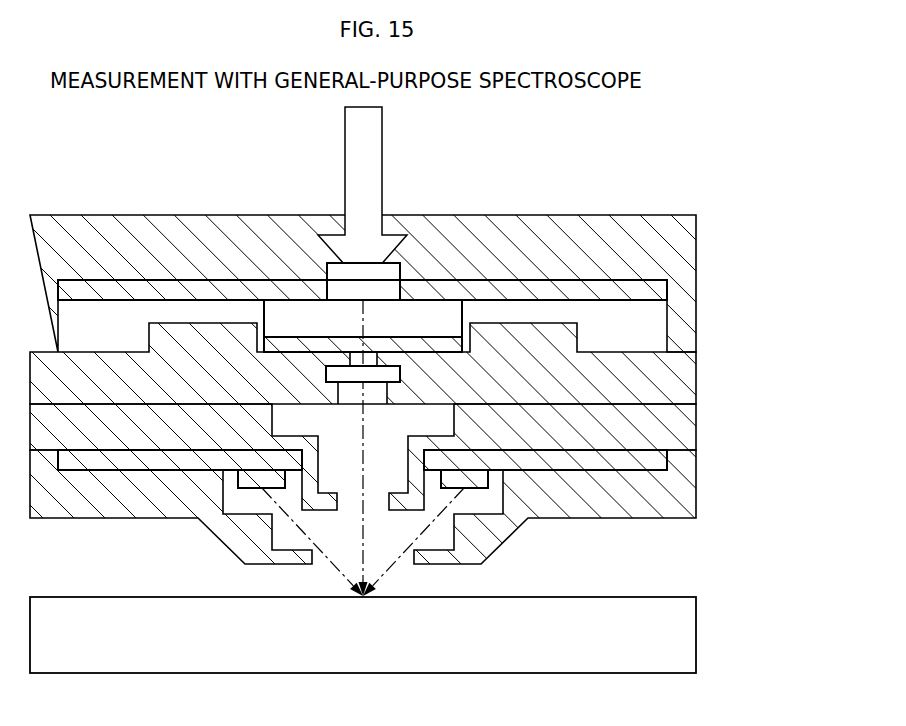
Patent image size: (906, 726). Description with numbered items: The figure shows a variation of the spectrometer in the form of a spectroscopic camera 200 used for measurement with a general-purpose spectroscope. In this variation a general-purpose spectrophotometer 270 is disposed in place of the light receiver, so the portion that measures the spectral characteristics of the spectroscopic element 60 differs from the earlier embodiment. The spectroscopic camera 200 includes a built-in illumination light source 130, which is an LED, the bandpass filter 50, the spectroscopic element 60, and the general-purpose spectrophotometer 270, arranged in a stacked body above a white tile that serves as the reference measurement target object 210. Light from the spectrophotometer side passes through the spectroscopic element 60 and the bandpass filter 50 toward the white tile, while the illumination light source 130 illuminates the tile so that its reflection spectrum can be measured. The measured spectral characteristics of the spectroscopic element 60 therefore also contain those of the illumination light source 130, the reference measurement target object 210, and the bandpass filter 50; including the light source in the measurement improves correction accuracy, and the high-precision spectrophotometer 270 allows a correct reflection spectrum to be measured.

The spectroscopic camera 200 is at (742, 117).
The reference measurement target object 210 is at (683, 630).
The general-purpose spectrophotometer 270 is at (385, 273).
The spectroscopic element 60 is at (440, 316).
The bandpass filter 50 is at (392, 374).
The illumination light source 130 is at (477, 480).